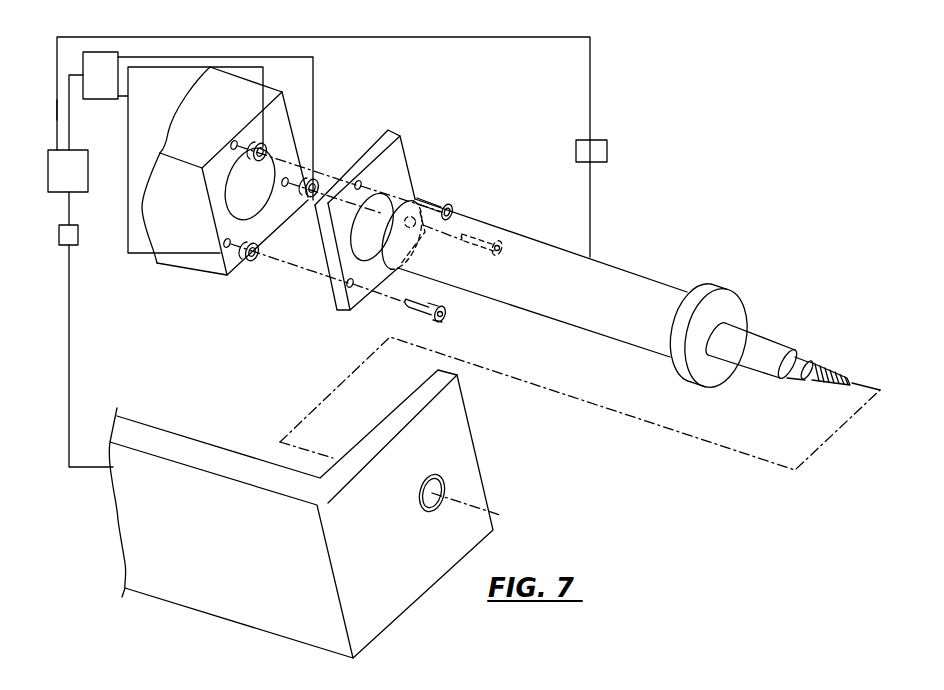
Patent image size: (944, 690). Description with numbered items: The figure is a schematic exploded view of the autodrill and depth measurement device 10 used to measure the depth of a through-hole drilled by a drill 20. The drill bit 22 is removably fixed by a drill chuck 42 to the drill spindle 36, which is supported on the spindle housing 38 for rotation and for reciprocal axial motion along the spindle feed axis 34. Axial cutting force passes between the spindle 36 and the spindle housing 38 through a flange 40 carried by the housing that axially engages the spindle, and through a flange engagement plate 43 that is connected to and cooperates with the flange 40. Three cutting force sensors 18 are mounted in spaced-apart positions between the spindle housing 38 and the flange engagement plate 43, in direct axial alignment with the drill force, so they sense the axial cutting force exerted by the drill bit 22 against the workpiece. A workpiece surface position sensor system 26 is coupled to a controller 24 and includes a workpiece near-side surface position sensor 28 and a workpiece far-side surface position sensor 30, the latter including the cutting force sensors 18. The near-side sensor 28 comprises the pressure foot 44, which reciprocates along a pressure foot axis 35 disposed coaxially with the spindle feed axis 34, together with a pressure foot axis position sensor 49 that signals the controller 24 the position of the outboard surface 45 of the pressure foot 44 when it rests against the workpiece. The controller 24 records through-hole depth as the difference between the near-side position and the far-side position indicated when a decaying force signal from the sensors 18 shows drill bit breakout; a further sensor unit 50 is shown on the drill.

The depth measurement device 10 is at (48, 176).
The cutting force sensors 18 is at (260, 162).
The drill 20 is at (80, 235).
The drill bit 22 is at (832, 366).
The controller 24 is at (77, 189).
The workpiece surface position sensor system 26 is at (69, 134).
The workpiece near-side surface position sensor 28 is at (463, 476).
The workpiece far-side surface position sensor 30 is at (102, 99).
The spindle feed axis 34 is at (858, 385).
The pressure foot axis 35 is at (855, 389).
The drill spindle 36 is at (650, 288).
The spindle housing 38 is at (183, 213).
The flange 40 is at (703, 288).
The drill chuck 42 is at (767, 345).
The flange engagement plate 43 is at (403, 152).
The pressure foot 44 is at (456, 440).
The outboard surface 45 is at (425, 512).
The pressure foot axis position sensor 49 is at (76, 245).
The sensor unit 50 is at (598, 152).